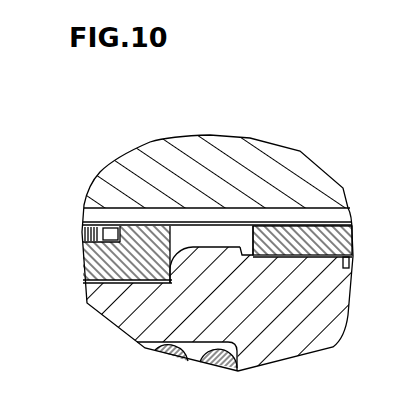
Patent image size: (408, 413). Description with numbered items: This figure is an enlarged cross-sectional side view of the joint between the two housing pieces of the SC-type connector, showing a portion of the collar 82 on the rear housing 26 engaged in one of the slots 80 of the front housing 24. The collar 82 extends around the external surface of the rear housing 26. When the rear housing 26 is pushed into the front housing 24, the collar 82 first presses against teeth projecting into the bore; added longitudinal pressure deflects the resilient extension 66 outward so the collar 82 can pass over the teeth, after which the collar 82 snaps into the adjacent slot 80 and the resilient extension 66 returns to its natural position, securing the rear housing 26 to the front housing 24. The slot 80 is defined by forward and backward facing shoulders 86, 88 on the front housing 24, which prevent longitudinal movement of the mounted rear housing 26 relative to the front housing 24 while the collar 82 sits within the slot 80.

The front housing 24 is at (88, 266).
The rear housing 26 is at (283, 327).
The resilient extension 66 is at (318, 240).
The slot 80 is at (200, 223).
The collar 82 is at (210, 248).
The forward facing shoulder 86 is at (170, 268).
The backward facing shoulder 88 is at (248, 257).